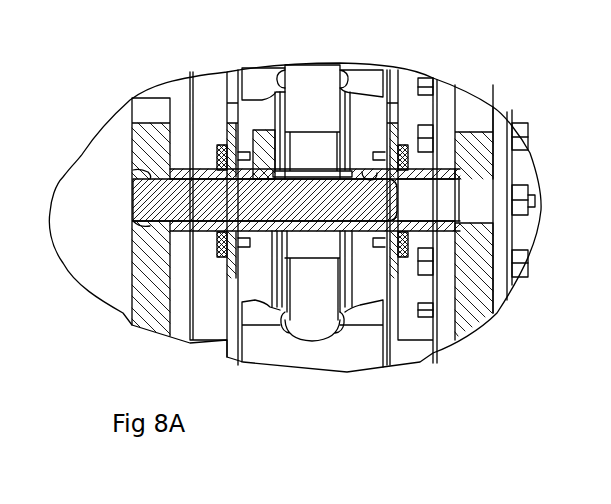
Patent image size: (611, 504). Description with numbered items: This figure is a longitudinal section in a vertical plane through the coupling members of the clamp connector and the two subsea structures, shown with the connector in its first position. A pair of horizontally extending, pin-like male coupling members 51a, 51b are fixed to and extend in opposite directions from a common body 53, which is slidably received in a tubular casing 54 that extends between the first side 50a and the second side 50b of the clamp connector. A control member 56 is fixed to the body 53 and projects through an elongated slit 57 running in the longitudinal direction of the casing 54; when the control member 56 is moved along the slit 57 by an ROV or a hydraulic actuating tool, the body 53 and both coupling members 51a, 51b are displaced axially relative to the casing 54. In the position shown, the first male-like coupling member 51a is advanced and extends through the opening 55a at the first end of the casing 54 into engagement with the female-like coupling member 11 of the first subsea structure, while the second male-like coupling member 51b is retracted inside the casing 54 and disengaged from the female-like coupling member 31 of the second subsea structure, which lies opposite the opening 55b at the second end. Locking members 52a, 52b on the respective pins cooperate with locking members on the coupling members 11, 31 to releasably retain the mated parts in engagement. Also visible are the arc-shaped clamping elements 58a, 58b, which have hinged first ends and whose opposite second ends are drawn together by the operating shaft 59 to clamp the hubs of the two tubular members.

The coupling member 11 is at (147, 222).
The coupling member 31 is at (480, 180).
The first side 50a is at (222, 83).
The second side 50b is at (405, 83).
The first male-like coupling member 51a is at (143, 198).
The second male-like coupling member 51b is at (397, 196).
The locking member 52a is at (150, 178).
The locking member 52b is at (370, 175).
The body 53 is at (207, 187).
The tubular casing 54 is at (317, 227).
The opening 55a is at (175, 227).
The opening 55b is at (460, 197).
The control member 56 is at (263, 137).
The elongated slit 57 is at (317, 172).
The clamping element 58a is at (268, 82).
The clamping element 58b is at (277, 357).
The operating shaft 59 is at (320, 333).